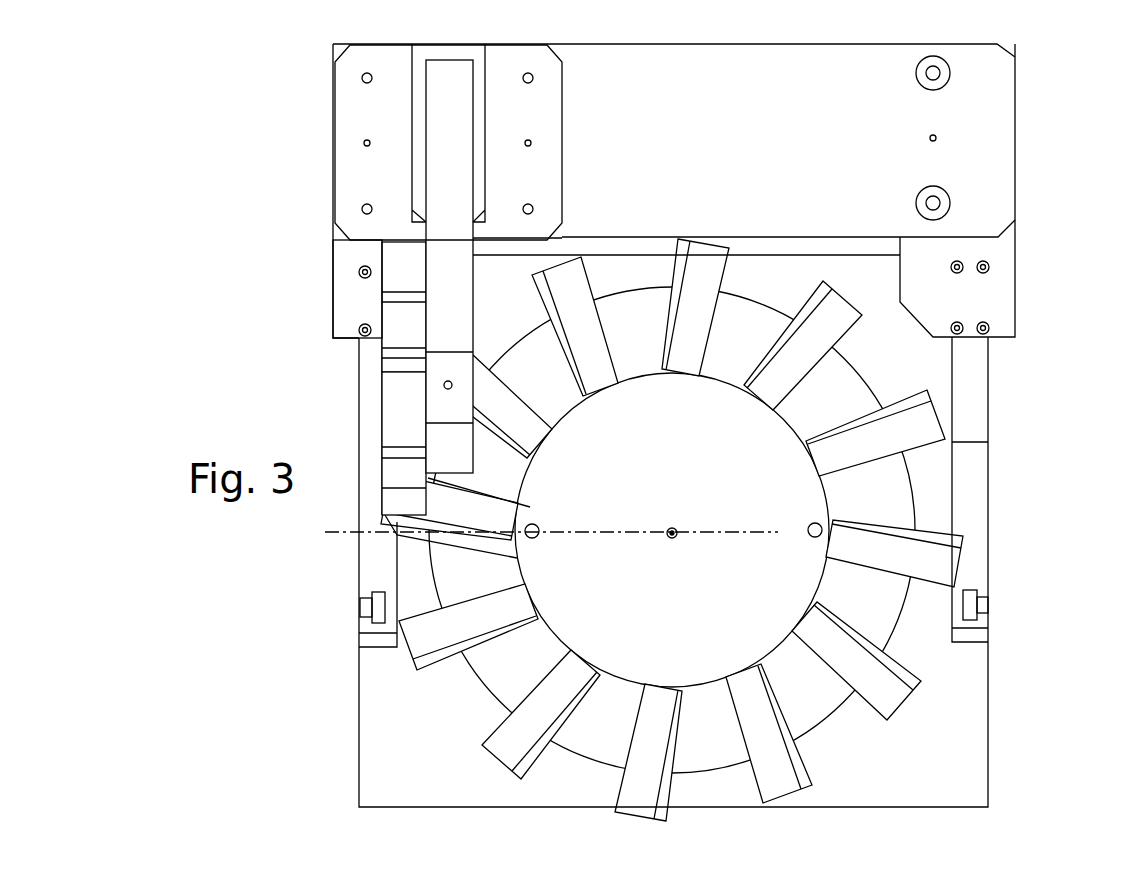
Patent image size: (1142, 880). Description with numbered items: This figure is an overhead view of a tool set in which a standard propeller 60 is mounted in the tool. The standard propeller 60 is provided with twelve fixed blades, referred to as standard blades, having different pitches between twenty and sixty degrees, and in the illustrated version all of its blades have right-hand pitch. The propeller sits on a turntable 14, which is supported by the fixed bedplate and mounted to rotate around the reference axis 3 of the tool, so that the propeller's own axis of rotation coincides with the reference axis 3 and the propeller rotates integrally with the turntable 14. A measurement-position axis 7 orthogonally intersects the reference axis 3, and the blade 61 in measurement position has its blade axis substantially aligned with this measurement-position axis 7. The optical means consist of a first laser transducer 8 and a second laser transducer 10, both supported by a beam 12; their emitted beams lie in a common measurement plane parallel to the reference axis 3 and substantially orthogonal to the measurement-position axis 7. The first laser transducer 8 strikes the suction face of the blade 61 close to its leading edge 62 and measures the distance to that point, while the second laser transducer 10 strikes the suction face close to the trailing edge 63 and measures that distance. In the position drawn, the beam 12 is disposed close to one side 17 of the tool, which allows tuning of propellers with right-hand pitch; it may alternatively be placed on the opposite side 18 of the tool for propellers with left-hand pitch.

The reference axis 3 is at (673, 540).
The measurement-position axis 7 is at (628, 535).
The first laser transducer 8 is at (398, 472).
The second laser transducer 10 is at (405, 268).
The beam 12 is at (443, 94).
The turntable 14 is at (600, 748).
The side of the tool 17 is at (333, 168).
The side of the tool 18 is at (1015, 132).
The standard propeller 60 is at (662, 634).
The blade 61 is at (500, 518).
The leading edge 62 is at (447, 523).
The trailing edge 63 is at (483, 492).